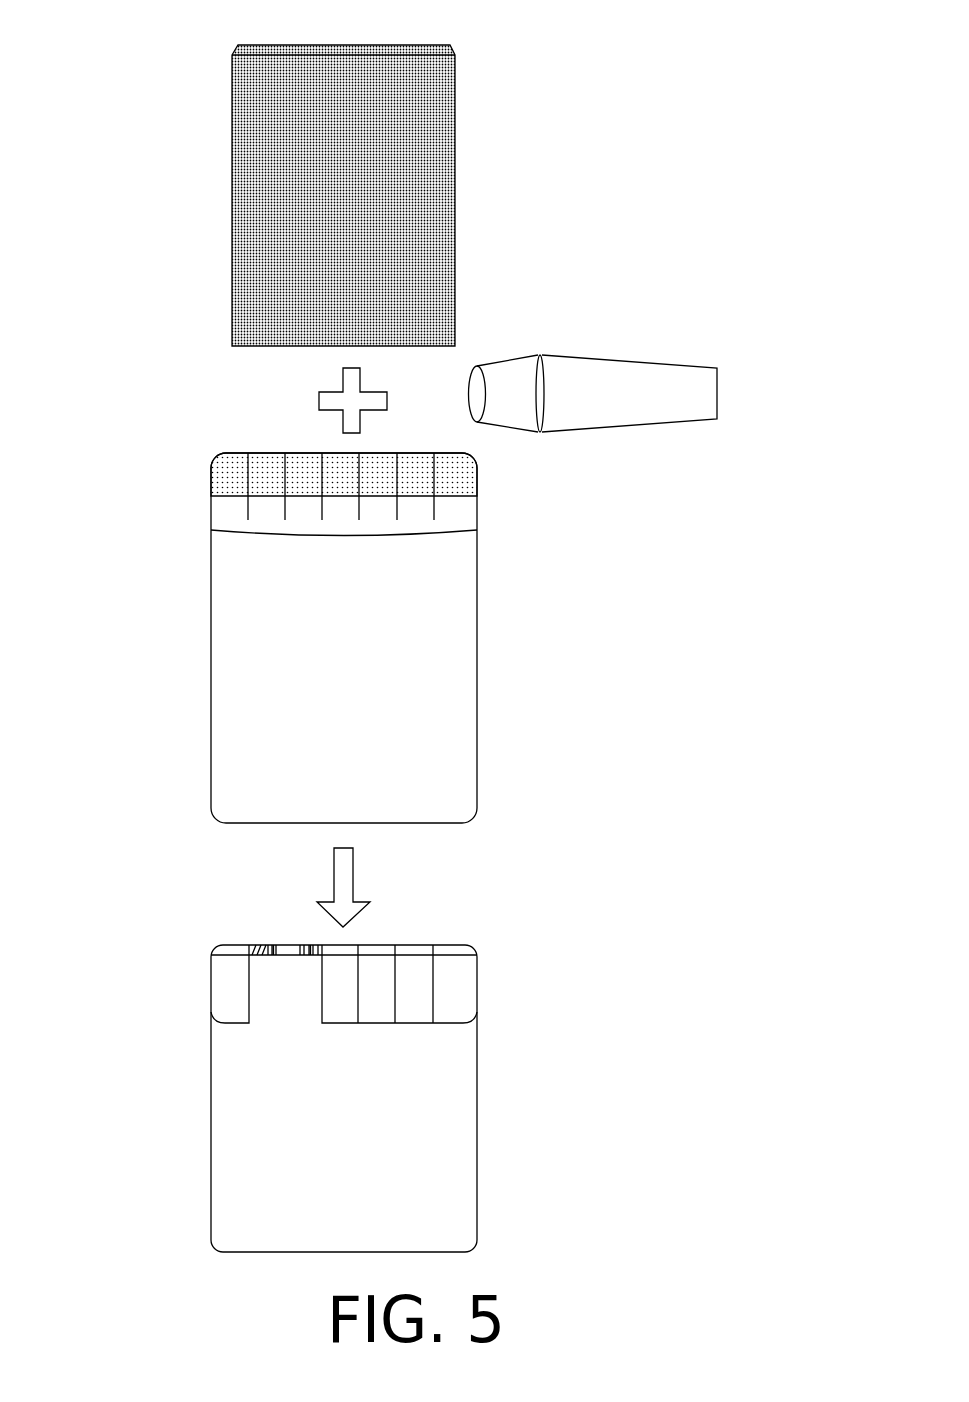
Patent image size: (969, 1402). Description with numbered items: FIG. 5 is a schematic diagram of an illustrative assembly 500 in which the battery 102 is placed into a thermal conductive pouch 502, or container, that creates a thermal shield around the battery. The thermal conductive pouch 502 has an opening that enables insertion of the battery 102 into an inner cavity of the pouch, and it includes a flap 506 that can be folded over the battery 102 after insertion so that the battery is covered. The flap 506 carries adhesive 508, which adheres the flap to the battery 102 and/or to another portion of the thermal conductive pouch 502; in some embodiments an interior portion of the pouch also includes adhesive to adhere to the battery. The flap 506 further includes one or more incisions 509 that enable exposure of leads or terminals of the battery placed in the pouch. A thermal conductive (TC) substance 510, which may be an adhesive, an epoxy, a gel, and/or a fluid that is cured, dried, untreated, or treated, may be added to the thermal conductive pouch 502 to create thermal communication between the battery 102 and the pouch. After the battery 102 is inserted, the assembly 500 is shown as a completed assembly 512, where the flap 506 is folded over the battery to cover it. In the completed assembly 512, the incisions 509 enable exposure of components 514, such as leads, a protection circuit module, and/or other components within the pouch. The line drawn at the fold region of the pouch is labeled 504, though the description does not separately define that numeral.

The assembly 500 is at (120, 100).
The battery 102 is at (455, 142).
The thermal conductive pouch 502 is at (439, 591).
The fold line / seam of pouch 504 is at (290, 533).
The flap 506 is at (250, 503).
The adhesive 508 is at (235, 467).
The incisions 509 is at (322, 465).
The thermal conductive substance 510 is at (667, 362).
The completed assembly 512 is at (451, 1051).
The components 514 is at (265, 926).